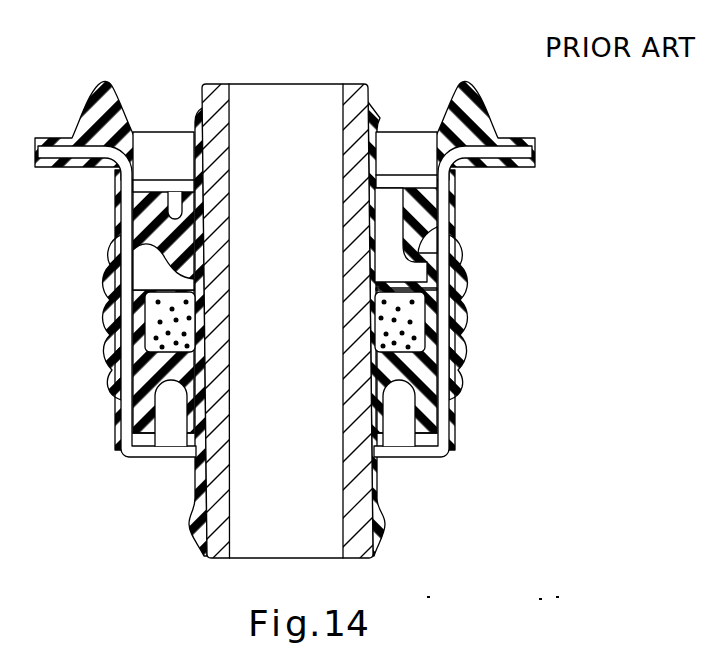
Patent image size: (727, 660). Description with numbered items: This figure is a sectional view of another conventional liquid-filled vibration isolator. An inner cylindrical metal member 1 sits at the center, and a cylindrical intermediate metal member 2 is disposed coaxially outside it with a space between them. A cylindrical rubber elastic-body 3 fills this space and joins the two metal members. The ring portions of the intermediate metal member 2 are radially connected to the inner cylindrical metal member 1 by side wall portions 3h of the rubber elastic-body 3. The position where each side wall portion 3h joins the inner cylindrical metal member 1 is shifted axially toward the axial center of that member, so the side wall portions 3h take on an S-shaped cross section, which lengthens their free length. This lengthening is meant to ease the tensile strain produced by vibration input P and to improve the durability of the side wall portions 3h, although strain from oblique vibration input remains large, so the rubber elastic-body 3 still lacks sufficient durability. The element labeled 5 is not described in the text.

The inner cylindrical metal member 1 is at (348, 85).
The cylindrical intermediate metal member 2 is at (152, 178).
The cylindrical rubber elastic-body 3 is at (176, 213).
The side wall portions 3h is at (142, 252).
The stopper bracket 5 is at (450, 214).
The vibration input P is at (337, 380).